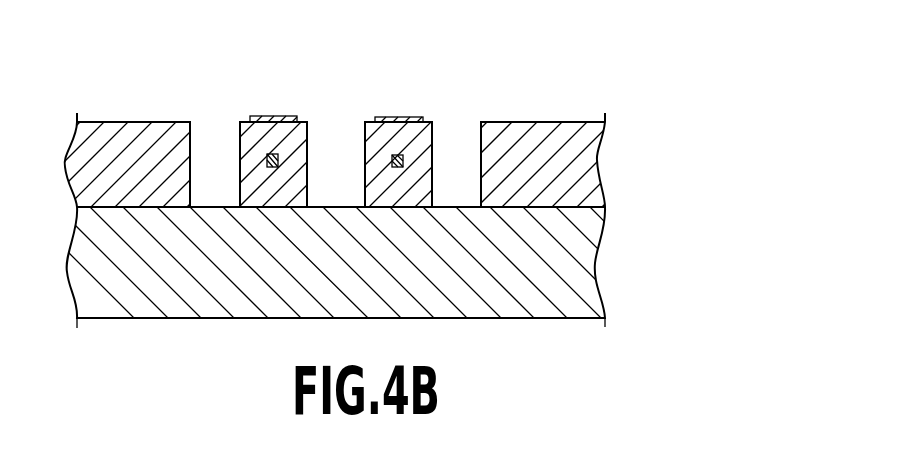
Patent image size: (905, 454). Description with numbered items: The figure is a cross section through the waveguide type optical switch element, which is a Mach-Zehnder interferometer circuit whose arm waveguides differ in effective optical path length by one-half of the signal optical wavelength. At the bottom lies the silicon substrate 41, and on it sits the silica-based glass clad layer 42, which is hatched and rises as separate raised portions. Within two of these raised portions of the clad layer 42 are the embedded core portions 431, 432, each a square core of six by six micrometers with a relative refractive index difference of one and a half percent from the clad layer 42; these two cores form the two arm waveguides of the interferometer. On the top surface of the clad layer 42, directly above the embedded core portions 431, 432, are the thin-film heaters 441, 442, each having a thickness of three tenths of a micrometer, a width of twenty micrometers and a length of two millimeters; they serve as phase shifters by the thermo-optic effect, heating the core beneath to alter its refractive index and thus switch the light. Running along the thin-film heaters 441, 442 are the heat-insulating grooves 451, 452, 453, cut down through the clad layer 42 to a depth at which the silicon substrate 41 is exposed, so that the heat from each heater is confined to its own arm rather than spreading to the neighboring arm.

The silicon substrate 41 is at (567, 272).
The clad layer 42 is at (118, 137).
The embedded core portion 431 is at (270, 155).
The embedded core portion 432 is at (399, 155).
The thin-film heater 441 is at (275, 117).
The thin-film heater 442 is at (390, 118).
The heat-insulating groove 451 is at (221, 140).
The heat-insulating groove 452 is at (337, 140).
The heat-insulating groove 453 is at (455, 140).